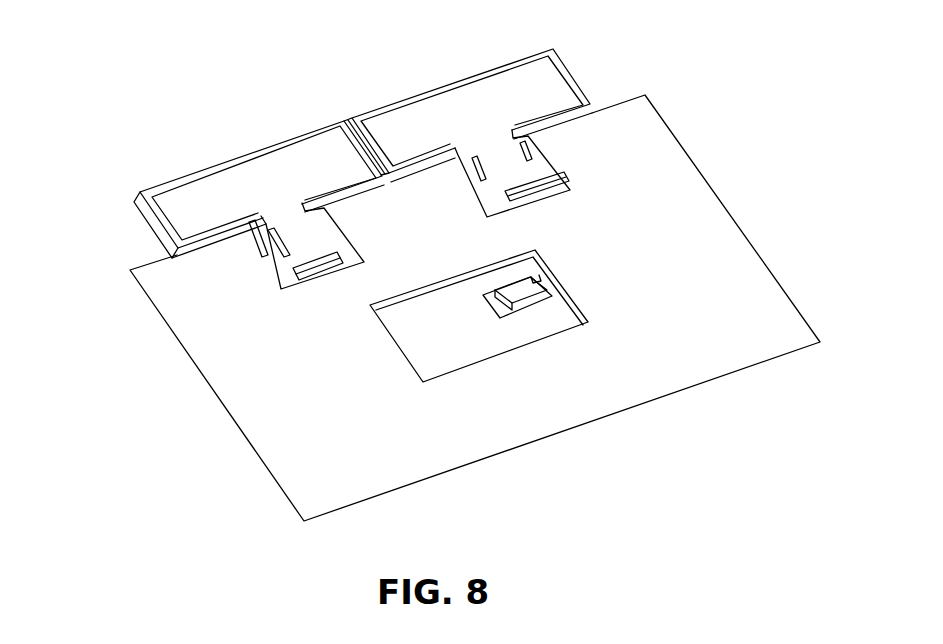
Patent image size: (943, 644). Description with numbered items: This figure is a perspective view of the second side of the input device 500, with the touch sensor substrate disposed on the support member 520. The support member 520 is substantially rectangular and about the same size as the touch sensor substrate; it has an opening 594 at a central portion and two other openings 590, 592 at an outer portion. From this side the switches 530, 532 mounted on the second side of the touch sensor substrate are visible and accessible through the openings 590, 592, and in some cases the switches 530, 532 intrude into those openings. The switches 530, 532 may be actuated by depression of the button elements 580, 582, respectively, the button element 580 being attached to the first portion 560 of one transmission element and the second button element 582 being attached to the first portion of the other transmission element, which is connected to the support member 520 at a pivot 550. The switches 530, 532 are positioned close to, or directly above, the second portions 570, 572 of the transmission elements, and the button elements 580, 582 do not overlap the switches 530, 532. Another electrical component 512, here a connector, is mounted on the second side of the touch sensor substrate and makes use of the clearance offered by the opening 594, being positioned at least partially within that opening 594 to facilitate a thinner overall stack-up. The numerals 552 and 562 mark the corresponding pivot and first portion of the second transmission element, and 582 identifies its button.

The input device 500 is at (395, 231).
The electrical component 512 is at (527, 312).
The support member 520 is at (700, 236).
The switch 530 is at (277, 259).
The switch 532 is at (553, 174).
The pivot 550 is at (267, 235).
The second receptacle 552 is at (530, 133).
The first portion 560 is at (250, 180).
The second cover panel 562 is at (473, 105).
The second portion 570 is at (305, 247).
The second portion 572 is at (505, 170).
The button element 580 is at (150, 227).
The second button element 582 is at (418, 82).
The opening 590 is at (283, 280).
The opening 592 is at (550, 183).
The opening 594 is at (460, 335).